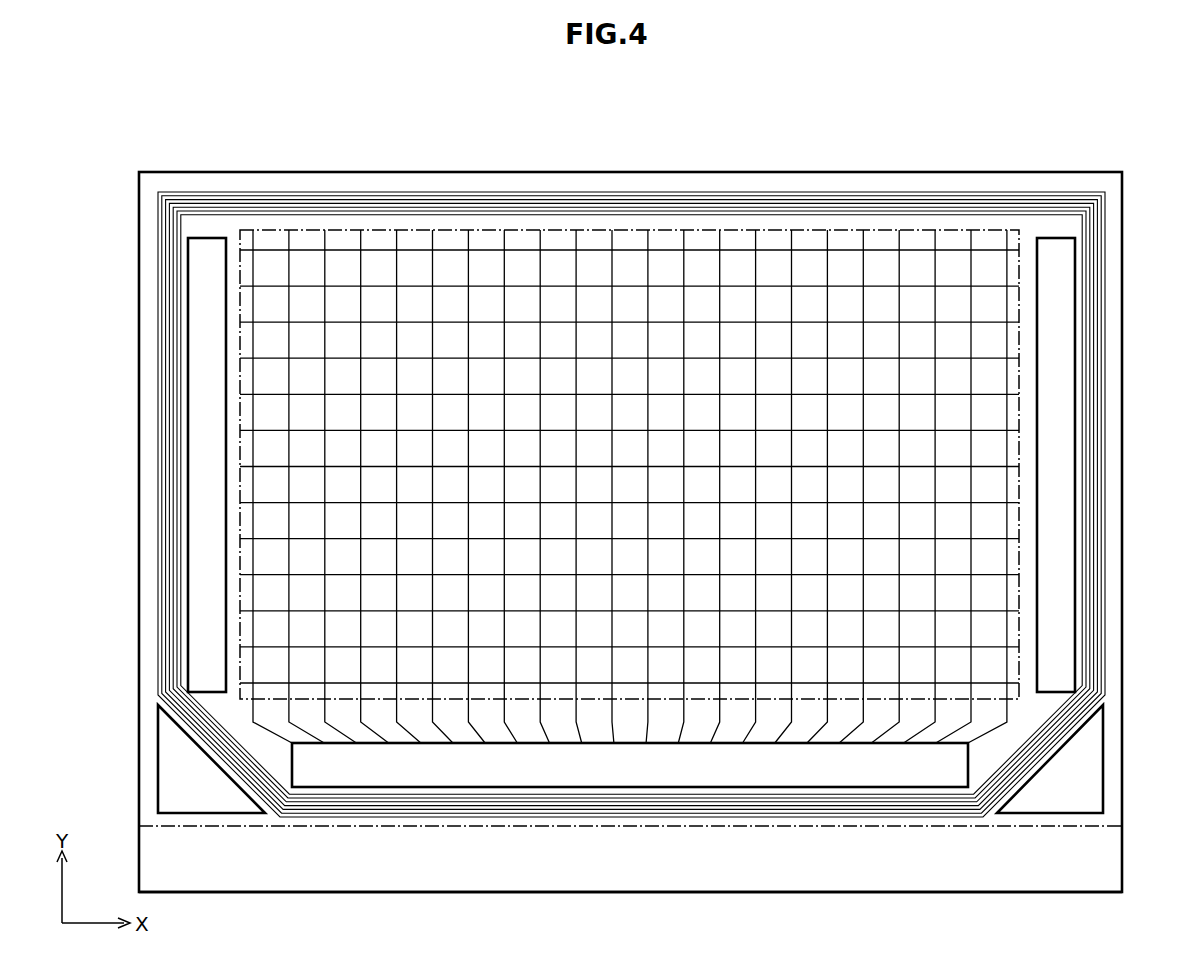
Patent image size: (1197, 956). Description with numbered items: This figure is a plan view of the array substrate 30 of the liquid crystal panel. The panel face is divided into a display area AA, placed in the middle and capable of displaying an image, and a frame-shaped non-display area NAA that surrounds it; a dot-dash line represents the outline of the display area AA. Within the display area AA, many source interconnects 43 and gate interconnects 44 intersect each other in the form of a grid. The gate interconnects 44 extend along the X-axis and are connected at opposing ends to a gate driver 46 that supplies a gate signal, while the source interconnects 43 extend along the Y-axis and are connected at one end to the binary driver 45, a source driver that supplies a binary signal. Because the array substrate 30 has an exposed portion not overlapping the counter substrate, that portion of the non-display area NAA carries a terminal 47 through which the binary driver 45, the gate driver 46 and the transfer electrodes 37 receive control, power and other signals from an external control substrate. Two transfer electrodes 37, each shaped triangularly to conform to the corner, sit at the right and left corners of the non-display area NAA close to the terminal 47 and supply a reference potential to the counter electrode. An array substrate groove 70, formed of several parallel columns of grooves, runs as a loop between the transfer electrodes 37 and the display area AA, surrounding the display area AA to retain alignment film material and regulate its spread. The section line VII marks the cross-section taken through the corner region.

The array substrate 30 is at (497, 123).
The source interconnects 43 is at (396, 272).
The gate interconnects 44 is at (343, 247).
The binary driver 45 is at (889, 768).
The gate driver 46 is at (1053, 255).
The terminal 47 is at (1100, 858).
The transfer electrode 37 is at (1087, 762).
The array substrate groove 70 is at (1102, 468).
The display area AA is at (738, 238).
The non-display area NAA is at (840, 182).
The section line VII- VII is at (1030, 704).